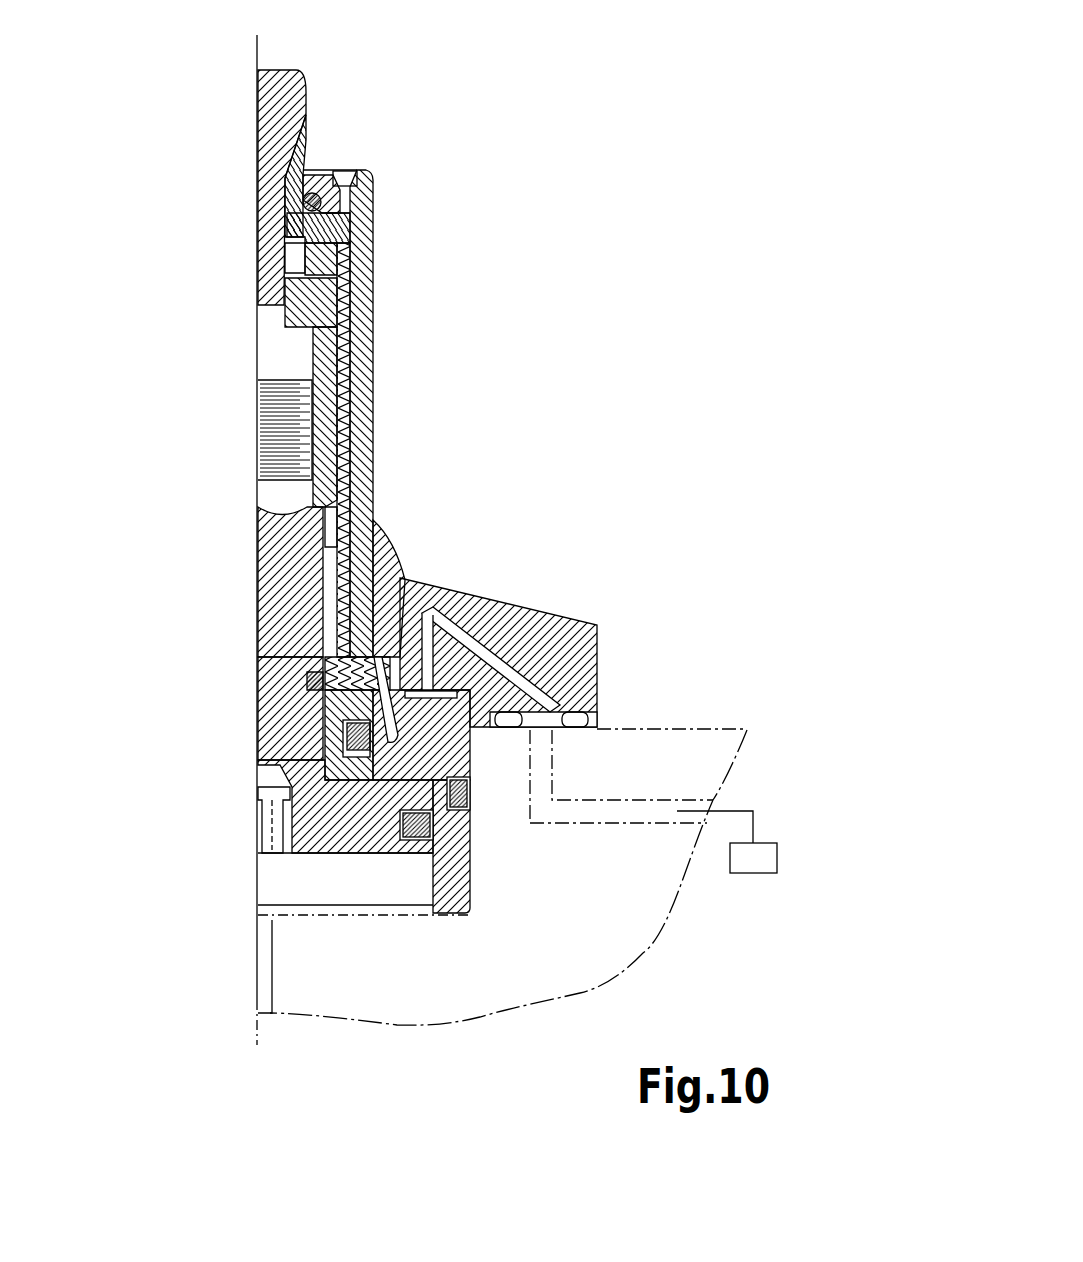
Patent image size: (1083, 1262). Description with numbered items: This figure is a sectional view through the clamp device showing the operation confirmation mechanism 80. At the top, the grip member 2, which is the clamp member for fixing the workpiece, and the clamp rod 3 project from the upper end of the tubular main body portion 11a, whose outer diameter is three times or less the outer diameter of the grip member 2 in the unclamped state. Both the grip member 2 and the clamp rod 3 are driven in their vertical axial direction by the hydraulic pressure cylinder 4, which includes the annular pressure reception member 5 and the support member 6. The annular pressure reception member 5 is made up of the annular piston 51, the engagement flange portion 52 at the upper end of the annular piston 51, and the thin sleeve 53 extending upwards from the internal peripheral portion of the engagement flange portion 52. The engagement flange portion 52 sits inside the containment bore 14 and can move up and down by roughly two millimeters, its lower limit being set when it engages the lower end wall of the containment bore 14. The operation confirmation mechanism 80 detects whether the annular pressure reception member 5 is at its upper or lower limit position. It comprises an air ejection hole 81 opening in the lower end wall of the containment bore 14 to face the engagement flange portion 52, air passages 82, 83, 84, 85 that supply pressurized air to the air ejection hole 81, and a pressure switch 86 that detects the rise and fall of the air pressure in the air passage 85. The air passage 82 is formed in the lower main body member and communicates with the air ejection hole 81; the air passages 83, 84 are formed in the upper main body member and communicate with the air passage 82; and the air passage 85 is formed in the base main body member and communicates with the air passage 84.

The grip member 2 is at (310, 116).
The clamp rod 3 is at (301, 67).
The hydraulic pressure cylinder 4 is at (281, 861).
The annular pressure reception member 5 is at (349, 548).
The support member 6 is at (352, 432).
The tubular main body portion 11a is at (375, 319).
The containment bore 14 is at (347, 655).
The annular piston 51 is at (343, 703).
The engagement flange portion 52 is at (318, 657).
The thin sleeve 53 is at (318, 608).
The operation confirmation mechanism 80 is at (514, 627).
The air ejection hole 81 is at (345, 723).
The air passage 82 is at (325, 762).
The air passage 83 is at (402, 690).
The air passage 84 is at (470, 636).
The air passage 85 is at (560, 823).
The pressure switch 86 is at (753, 873).